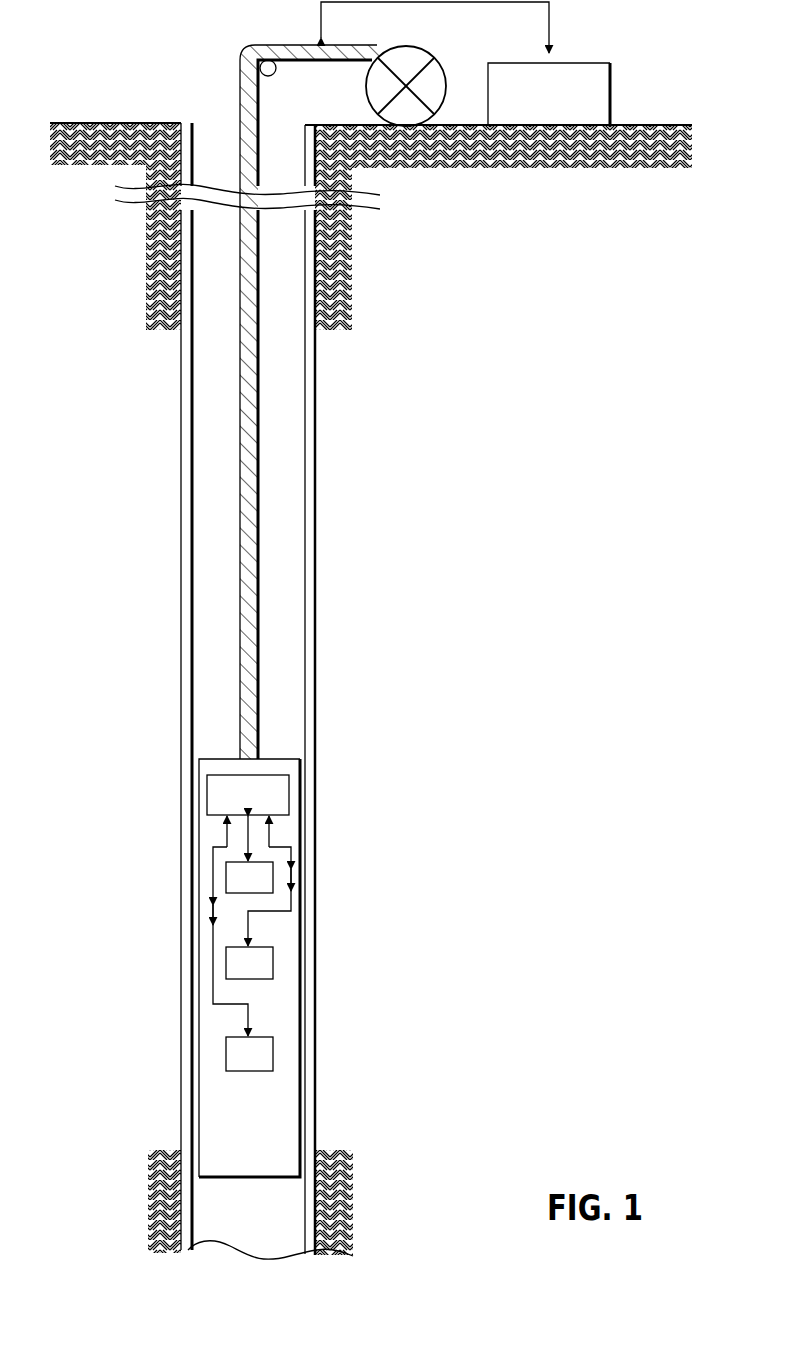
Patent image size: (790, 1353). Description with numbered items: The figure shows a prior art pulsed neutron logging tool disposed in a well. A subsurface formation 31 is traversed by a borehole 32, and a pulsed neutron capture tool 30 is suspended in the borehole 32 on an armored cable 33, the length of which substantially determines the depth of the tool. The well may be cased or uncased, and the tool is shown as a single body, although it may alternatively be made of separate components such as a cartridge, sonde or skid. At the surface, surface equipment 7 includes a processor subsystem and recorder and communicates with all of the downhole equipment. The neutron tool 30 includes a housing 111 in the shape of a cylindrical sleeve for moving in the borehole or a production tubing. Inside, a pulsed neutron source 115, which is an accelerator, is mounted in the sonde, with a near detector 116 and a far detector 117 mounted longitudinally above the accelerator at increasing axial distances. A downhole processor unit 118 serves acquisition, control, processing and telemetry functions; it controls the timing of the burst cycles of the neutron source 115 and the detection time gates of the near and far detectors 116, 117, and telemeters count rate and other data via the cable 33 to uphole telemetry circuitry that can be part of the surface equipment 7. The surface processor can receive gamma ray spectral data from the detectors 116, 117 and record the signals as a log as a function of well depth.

The surface equipment 7 is at (587, 92).
The pulsed neutron capture tool 30 is at (255, 922).
The subsurface formation 31 is at (90, 123).
The borehole 32 is at (218, 146).
The armored cable 33 is at (247, 62).
The housing 111 is at (194, 1080).
The pulsed neutron source 115 is at (262, 1055).
The near detector 116 is at (262, 962).
The far detector 117 is at (235, 880).
The downhole processor unit 118 is at (275, 800).